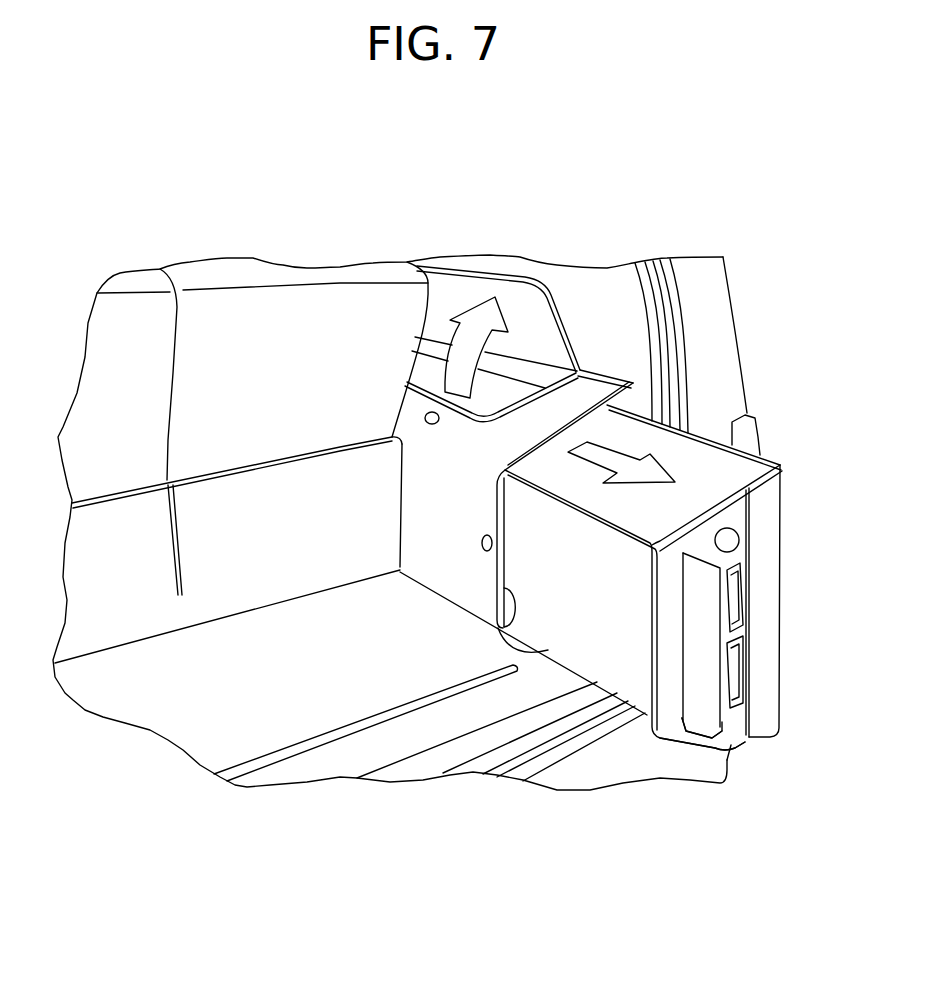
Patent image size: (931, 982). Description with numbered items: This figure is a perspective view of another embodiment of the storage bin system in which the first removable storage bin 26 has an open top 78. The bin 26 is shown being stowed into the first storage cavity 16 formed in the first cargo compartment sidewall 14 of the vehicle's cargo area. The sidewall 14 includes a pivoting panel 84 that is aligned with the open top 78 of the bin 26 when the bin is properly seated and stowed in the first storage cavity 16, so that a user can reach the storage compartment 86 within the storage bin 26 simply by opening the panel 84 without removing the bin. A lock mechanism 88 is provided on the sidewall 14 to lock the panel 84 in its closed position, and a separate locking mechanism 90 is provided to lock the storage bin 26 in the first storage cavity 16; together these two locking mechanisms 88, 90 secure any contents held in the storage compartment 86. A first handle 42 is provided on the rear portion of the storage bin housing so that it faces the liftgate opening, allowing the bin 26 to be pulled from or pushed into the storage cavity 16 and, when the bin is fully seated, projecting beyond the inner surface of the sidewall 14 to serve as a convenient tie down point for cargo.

The first cargo compartment sidewall 14 is at (433, 553).
The first storage cavity 16 is at (493, 658).
The first removable storage bin 26 is at (518, 778).
The first handle 42 is at (731, 727).
The open top 78 is at (697, 432).
The pivoting panel 84 is at (528, 312).
The storage compartment 86 is at (663, 520).
The lock mechanism 88 is at (428, 425).
The locking mechanism 90 is at (484, 552).